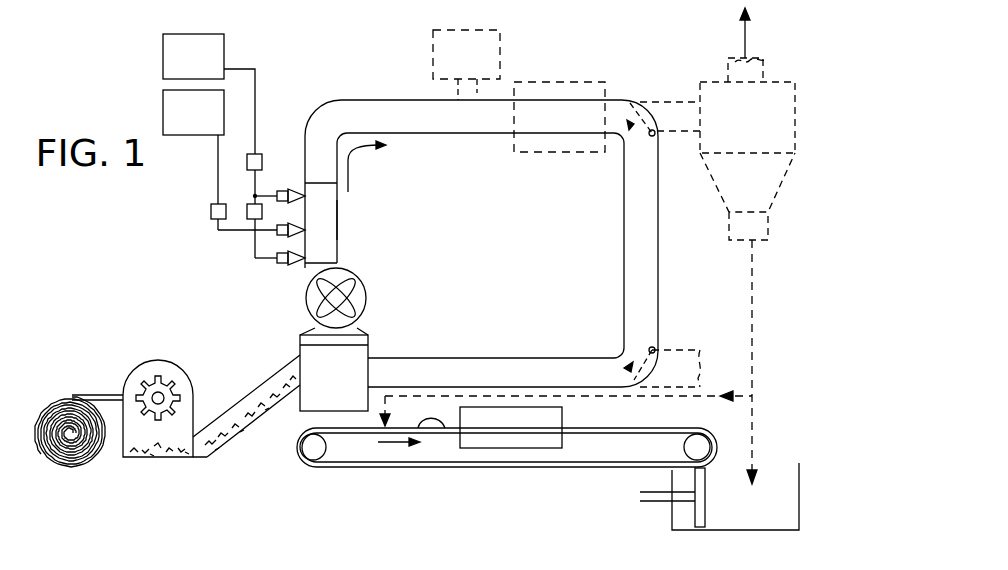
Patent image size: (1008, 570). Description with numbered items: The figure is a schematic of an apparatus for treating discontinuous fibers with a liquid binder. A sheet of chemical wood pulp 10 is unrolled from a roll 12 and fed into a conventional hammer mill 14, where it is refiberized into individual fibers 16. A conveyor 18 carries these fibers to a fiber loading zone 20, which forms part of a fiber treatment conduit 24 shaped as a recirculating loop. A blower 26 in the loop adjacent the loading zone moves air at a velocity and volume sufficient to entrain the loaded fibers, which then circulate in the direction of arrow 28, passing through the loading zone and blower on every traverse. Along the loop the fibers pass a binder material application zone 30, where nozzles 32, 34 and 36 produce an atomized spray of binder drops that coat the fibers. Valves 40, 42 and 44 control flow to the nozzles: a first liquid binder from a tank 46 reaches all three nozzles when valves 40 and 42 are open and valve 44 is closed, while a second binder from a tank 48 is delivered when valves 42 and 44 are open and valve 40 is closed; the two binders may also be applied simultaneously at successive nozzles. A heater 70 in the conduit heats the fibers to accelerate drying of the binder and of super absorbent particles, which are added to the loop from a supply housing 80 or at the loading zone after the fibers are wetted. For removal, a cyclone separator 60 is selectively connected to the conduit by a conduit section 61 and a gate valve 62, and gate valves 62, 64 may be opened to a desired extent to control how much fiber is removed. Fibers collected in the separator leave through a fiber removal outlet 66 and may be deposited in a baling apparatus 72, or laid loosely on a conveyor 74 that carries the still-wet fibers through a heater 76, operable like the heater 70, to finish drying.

The sheet of chemical wood pulp 10 is at (101, 395).
The roll 12 is at (60, 460).
The hammer mill 14 is at (163, 360).
The individual fibers 16 is at (172, 462).
The conveyor 18 is at (258, 418).
The fiber loading zone 20 is at (358, 357).
The fiber treatment conduit 24 is at (480, 148).
The blower 26 is at (364, 286).
The arrow 28 is at (350, 170).
The binder material application zone 30 is at (338, 213).
The nozzle 32 is at (292, 265).
The nozzle 34 is at (277, 233).
The nozzle 36 is at (300, 190).
The valve 40 is at (211, 207).
The valve 42 is at (247, 215).
The valve 44 is at (247, 162).
The tank 46 is at (163, 113).
The tank 48 is at (163, 53).
The cyclone separator 60 is at (712, 82).
The conduit section 61 is at (672, 100).
The gate valve 62 is at (645, 115).
The gate valve 64 is at (630, 330).
The fiber removal outlet 66 is at (752, 276).
The heater 70 is at (549, 82).
The baling apparatus 72 is at (777, 471).
The conveyor 74 is at (445, 432).
The heater 76 is at (503, 438).
The supply housing 80 is at (433, 48).